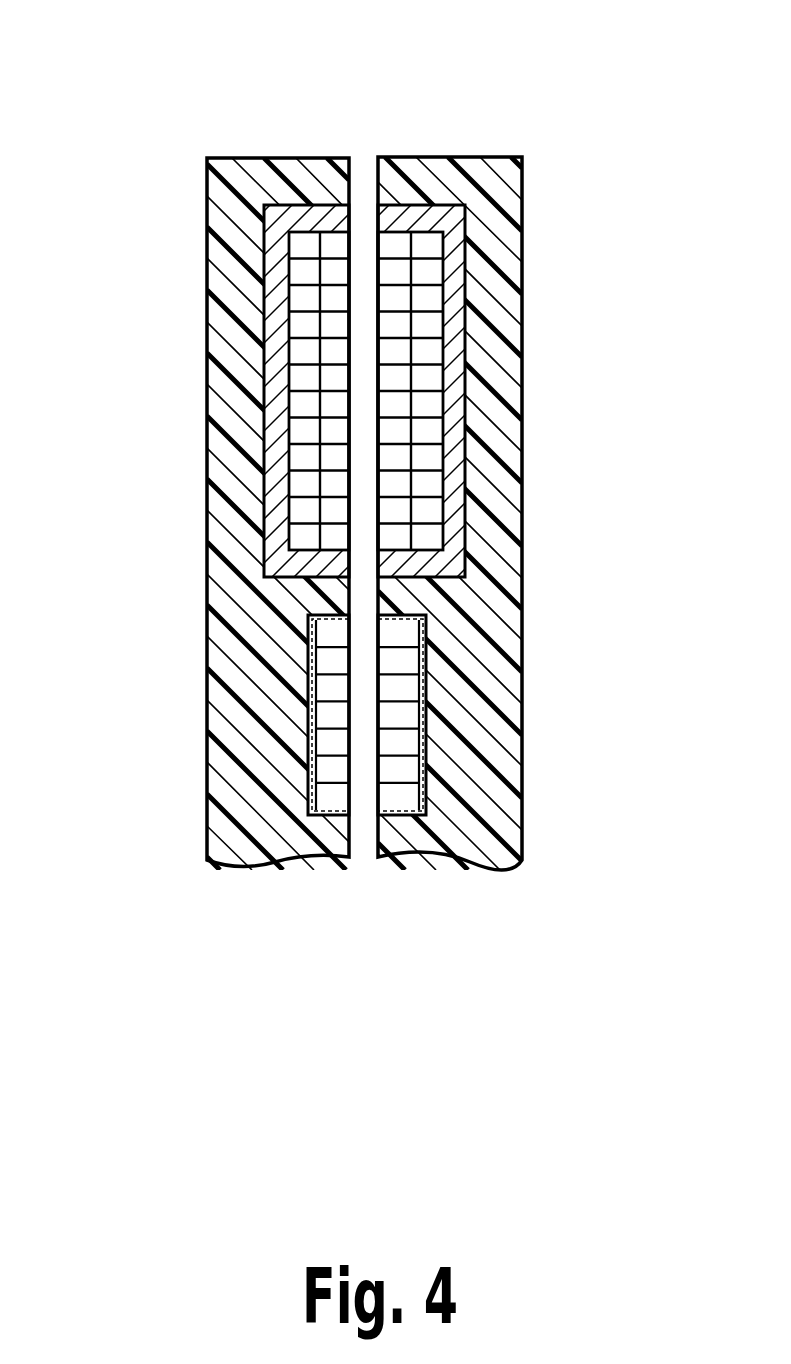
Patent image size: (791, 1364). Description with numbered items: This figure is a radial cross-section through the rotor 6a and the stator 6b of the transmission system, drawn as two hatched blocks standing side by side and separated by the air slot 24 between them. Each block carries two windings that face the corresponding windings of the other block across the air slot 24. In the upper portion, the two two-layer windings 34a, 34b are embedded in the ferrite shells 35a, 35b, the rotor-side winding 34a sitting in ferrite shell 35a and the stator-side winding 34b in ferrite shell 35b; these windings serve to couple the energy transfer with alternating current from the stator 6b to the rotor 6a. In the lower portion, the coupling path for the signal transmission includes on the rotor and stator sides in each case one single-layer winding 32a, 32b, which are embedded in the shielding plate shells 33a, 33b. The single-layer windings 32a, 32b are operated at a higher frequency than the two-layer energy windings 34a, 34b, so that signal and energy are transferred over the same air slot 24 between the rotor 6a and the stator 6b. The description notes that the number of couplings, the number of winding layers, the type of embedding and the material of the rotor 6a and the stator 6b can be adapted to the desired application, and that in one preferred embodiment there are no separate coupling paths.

The rotor 6a is at (243, 205).
The stator 6b is at (492, 203).
The two-layer winding 34a is at (332, 302).
The two-layer winding 34b is at (398, 302).
The ferrite shell 35a is at (280, 487).
The ferrite shell 35b is at (453, 485).
The single-layer winding 32a is at (333, 663).
The single-layer winding 32b is at (400, 662).
The shielding plate shell 33a is at (300, 780).
The shielding plate shell 33b is at (425, 780).
The air slot 24 is at (367, 845).